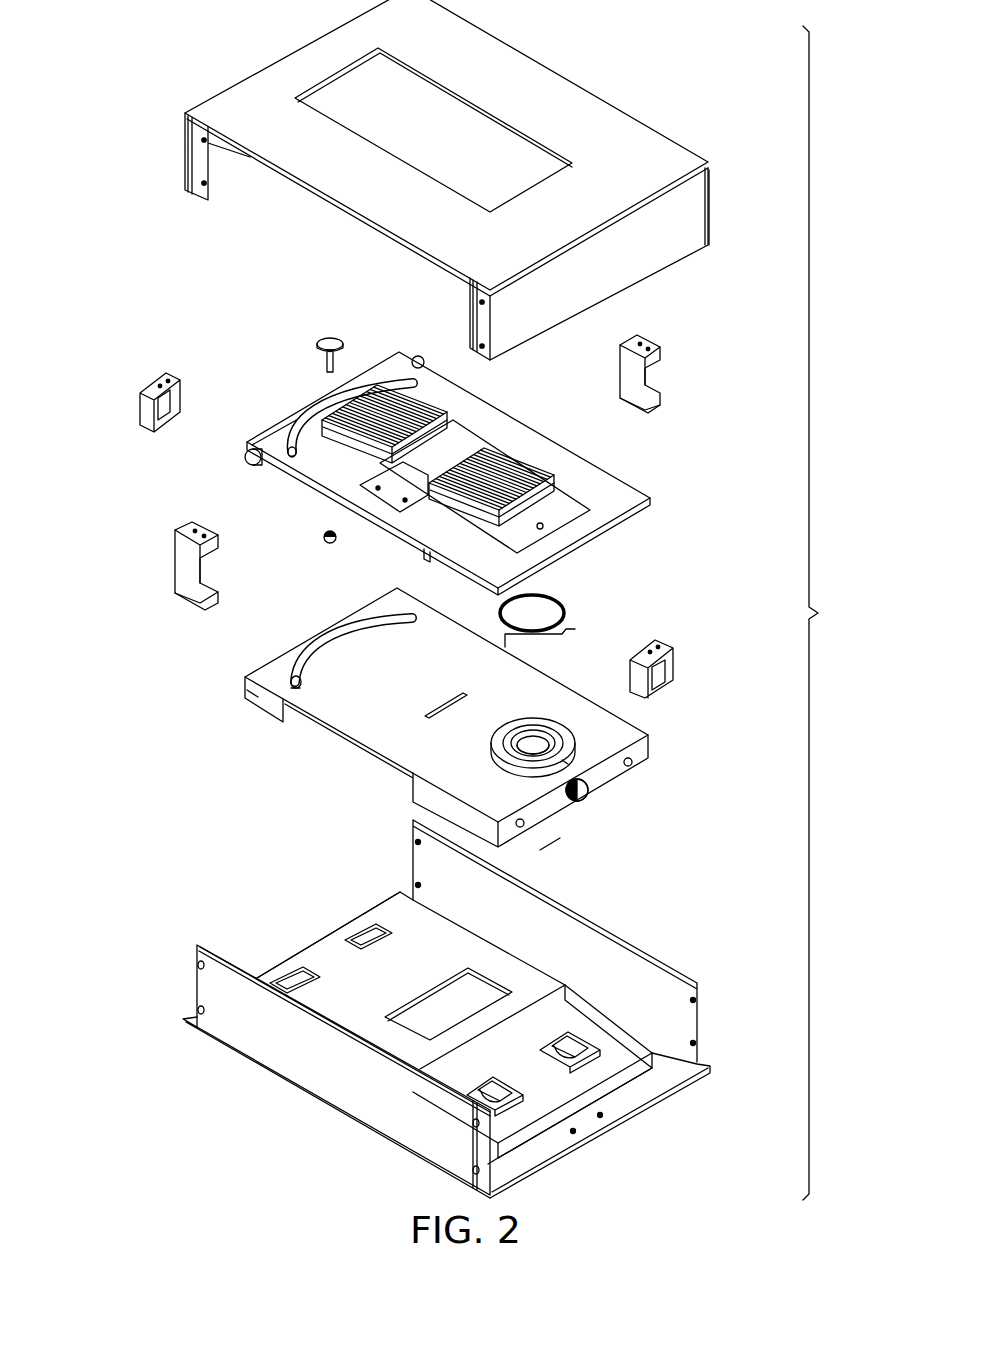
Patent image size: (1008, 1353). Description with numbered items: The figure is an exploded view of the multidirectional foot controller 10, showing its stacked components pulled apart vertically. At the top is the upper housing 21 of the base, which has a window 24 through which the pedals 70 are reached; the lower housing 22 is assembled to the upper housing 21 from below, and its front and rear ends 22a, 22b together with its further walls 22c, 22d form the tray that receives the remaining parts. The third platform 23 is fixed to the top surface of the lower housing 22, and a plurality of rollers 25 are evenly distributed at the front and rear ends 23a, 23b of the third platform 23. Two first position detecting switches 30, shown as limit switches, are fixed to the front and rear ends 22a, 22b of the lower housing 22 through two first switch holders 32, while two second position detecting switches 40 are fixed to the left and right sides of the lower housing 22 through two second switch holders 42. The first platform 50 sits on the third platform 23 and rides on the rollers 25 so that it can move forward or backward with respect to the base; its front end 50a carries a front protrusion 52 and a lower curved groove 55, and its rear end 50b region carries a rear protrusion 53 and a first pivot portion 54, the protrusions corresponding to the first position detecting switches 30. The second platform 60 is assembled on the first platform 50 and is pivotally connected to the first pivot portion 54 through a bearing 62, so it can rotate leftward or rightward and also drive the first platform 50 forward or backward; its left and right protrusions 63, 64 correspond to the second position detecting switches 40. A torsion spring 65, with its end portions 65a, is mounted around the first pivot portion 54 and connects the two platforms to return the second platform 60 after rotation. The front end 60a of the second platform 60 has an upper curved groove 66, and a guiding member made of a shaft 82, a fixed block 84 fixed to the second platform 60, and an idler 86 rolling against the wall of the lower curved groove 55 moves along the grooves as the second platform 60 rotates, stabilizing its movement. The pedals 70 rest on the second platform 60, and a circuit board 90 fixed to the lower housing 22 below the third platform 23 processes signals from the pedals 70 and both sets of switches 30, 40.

The multidirectional foot controller 10 is at (857, 628).
The upper housing 21 is at (247, 105).
The window 24 is at (472, 135).
The lower housing 22 is at (323, 1055).
The front end of the lower housing 22a is at (277, 968).
The rear end of the lower housing 22b is at (575, 1138).
The base front wall 22c is at (273, 1035).
The base rear wall 22d is at (706, 1070).
The third platform 23 is at (630, 1042).
The front end of the third platform 23a is at (337, 955).
The rear end of the third platform 23b is at (570, 1085).
The rollers 25 is at (297, 985).
The first position detecting switches 30 is at (177, 388).
The first switch holders 32 is at (132, 407).
The second position detecting switches 40 is at (212, 522).
The second switch holders 42 is at (182, 558).
The first platform 50 is at (326, 742).
The front end of the first platform 50a is at (243, 677).
The rear end of the first platform 50b is at (542, 823).
The front protrusion 52 is at (318, 632).
The rear protrusion 53 is at (582, 800).
The first pivot portion 54 is at (565, 763).
The lower curved groove 55 is at (288, 682).
The second platform 60 is at (642, 523).
The front end of the second platform 60a is at (263, 430).
The bearing 62 is at (555, 740).
The left protrusion 63 is at (260, 465).
The right protrusion 64 is at (415, 357).
The torsion spring 65 is at (563, 597).
The ring tab 65a is at (565, 632).
The upper curved groove 66 is at (313, 423).
The pedals 70 is at (427, 387).
The shaft 82 is at (327, 363).
The fixed block 84 is at (328, 337).
The idler 86 is at (324, 541).
The circuit board 90 is at (480, 992).